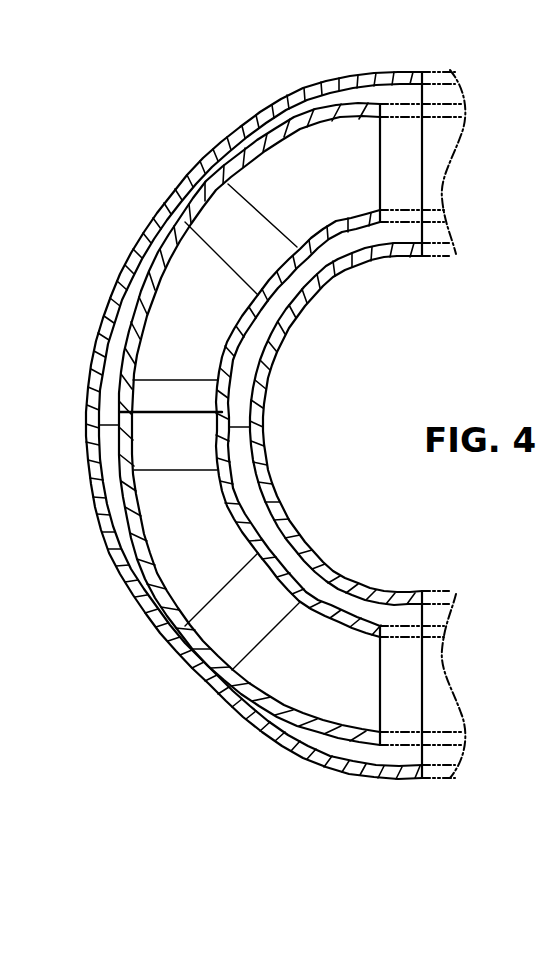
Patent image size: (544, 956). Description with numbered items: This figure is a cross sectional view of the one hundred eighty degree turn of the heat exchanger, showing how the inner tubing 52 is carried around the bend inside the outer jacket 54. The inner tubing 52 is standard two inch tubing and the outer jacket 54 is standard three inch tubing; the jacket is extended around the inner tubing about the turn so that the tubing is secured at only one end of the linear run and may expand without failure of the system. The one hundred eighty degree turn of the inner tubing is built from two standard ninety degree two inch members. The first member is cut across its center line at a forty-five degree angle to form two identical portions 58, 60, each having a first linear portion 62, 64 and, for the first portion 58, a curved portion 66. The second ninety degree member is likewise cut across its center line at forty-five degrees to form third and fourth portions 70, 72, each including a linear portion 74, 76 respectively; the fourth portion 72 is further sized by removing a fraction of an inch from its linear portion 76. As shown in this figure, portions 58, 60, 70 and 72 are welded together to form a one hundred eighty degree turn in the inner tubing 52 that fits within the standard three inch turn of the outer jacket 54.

The inner tubing 52 is at (297, 750).
The outer jacket 54 is at (218, 706).
The first portion 58 is at (332, 95).
The second portion 60 is at (346, 766).
The first linear portion 62 is at (273, 257).
The first linear portion 64 is at (272, 590).
The curved portion 66 is at (246, 125).
The third portion 70 is at (133, 600).
The fourth portion 72 is at (141, 232).
The linear portion 74 is at (205, 444).
The linear portion 76 is at (216, 390).